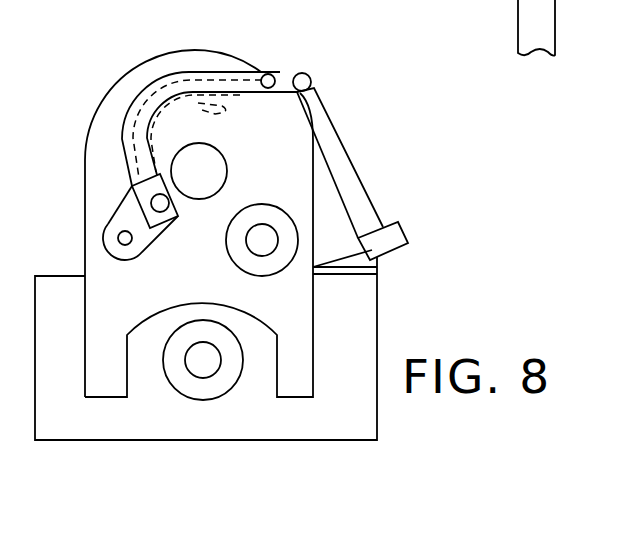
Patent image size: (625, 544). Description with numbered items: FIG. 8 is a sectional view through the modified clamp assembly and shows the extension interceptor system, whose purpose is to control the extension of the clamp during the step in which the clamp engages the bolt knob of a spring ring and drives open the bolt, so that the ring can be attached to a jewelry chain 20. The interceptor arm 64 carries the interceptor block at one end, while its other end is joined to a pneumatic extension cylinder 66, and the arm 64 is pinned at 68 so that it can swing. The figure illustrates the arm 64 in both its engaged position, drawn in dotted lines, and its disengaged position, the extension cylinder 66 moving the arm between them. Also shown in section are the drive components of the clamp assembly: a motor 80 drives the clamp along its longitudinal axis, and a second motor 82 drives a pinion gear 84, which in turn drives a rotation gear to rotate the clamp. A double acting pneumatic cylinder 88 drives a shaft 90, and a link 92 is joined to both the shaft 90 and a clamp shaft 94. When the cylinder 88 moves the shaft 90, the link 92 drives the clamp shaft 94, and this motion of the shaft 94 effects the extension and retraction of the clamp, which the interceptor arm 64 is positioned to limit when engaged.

The jewelry chain 20 is at (557, 29).
The interceptor arm 64 is at (148, 95).
The pneumatic extension cylinder 66 is at (365, 170).
The pin 68 is at (271, 73).
The motor 80 is at (205, 395).
The motor 82 is at (287, 265).
The pinion gear 84 is at (196, 112).
The double acting pneumatic cylinder 88 is at (102, 240).
The shaft 90 is at (172, 218).
The link 92 is at (140, 213).
The clamp shaft 94 is at (223, 157).